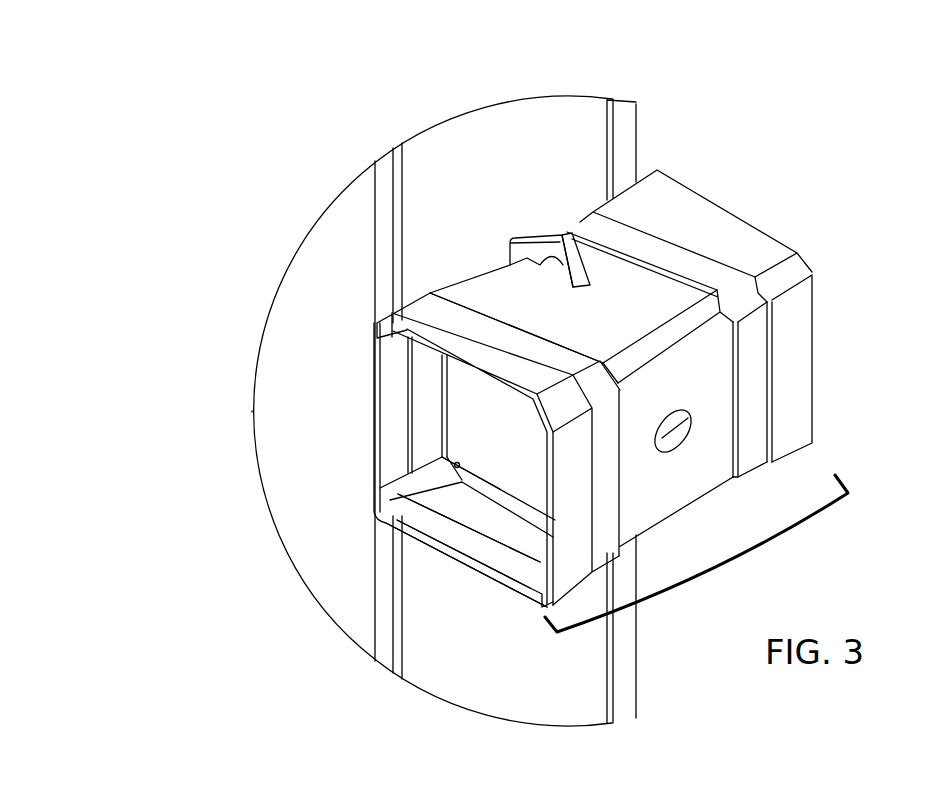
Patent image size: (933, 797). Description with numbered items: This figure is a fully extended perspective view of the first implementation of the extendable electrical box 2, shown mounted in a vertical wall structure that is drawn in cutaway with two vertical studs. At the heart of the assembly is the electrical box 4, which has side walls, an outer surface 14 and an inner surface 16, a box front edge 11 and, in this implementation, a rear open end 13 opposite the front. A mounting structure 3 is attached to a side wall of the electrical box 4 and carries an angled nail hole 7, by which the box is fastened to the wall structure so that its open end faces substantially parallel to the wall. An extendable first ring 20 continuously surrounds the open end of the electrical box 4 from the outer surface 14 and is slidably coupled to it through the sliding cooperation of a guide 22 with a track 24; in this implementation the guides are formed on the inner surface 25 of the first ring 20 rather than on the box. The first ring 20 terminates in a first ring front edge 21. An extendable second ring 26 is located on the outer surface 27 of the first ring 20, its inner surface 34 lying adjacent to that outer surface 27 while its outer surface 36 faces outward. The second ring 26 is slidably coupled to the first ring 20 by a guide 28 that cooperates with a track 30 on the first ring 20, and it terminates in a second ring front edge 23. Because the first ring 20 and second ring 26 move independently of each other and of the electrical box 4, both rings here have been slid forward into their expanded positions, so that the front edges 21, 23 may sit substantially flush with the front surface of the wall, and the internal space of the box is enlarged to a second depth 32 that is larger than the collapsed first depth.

The extendable electrical box 2 is at (789, 123).
The mounting structure 3 is at (536, 246).
The electrical box 4 is at (645, 285).
The angled nail hole 7 is at (568, 234).
The box front edge 11 is at (490, 497).
The rear open end 13 is at (819, 271).
The outer surface 14 is at (507, 290).
The inner surface 16 is at (482, 395).
The extendable first ring 20 is at (490, 313).
The first ring front edge 21 is at (473, 530).
The guide 22 is at (720, 308).
The second ring front edge 23 is at (475, 568).
The track 24 is at (690, 335).
The inner surface of first ring 25 is at (427, 387).
The extendable second ring 26 is at (438, 323).
The outer surface of first ring 27 is at (467, 300).
The guide 28 is at (758, 293).
The track 30 is at (745, 307).
The second depth 32 is at (745, 553).
The inner surface of second ring 34 is at (508, 581).
The outer surface of second ring 36 is at (520, 597).